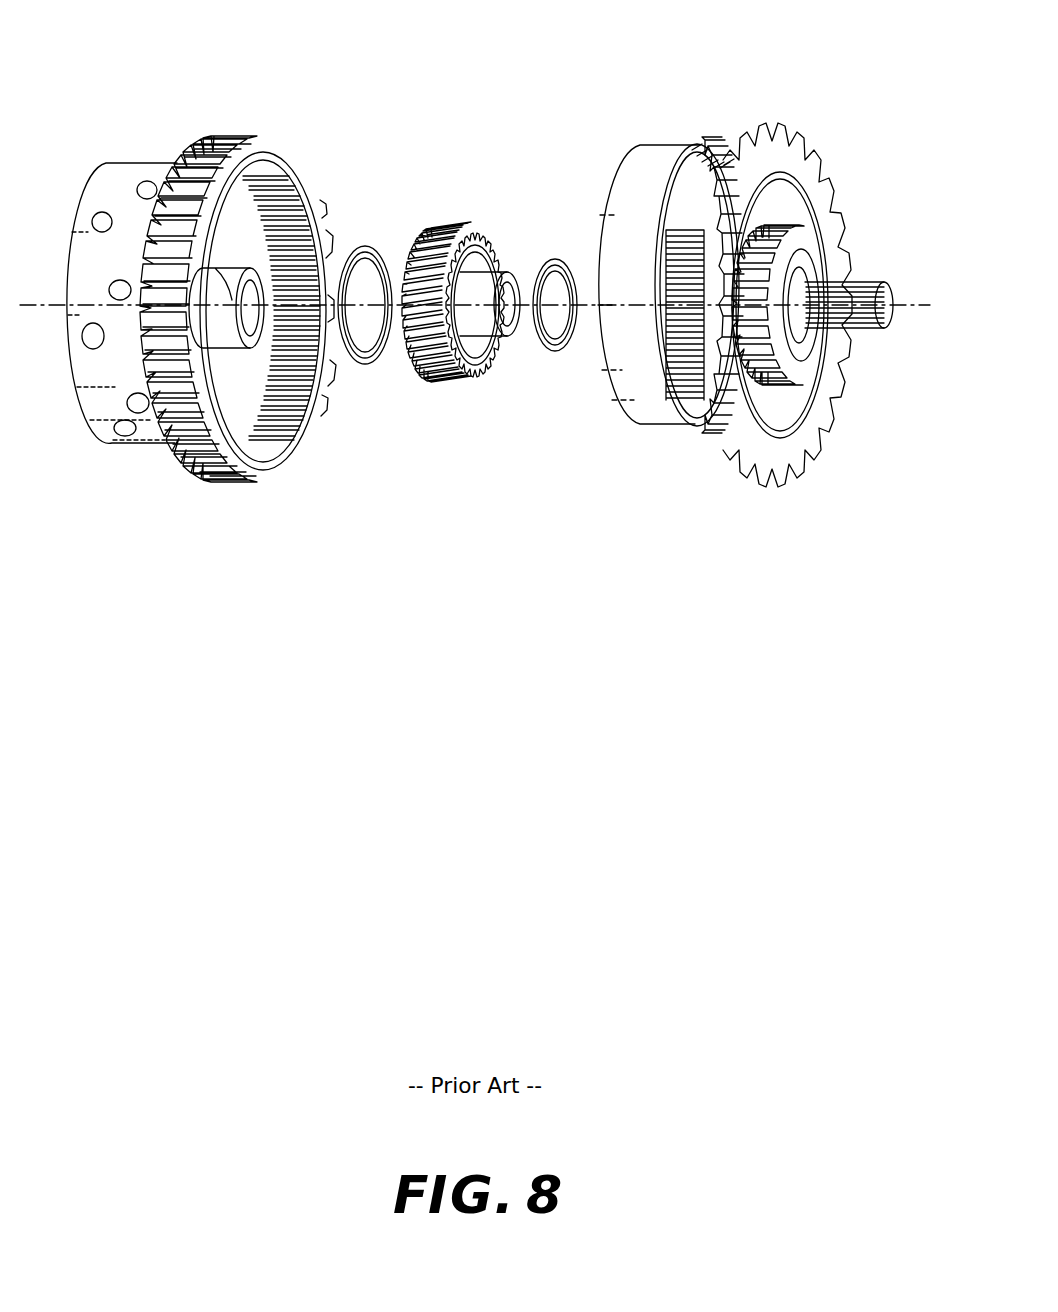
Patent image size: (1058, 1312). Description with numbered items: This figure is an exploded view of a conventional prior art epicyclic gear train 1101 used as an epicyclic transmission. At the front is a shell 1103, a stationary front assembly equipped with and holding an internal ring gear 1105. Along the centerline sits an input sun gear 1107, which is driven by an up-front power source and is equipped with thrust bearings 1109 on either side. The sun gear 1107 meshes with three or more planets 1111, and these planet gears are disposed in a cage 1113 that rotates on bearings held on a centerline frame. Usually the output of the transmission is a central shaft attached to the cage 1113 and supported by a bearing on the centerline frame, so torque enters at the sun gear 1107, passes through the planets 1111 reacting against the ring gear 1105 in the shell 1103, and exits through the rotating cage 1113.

The epicyclic gear train 1101 is at (124, 36).
The shell 1103 is at (233, 478).
The ring 1105 is at (307, 186).
The input sun gear 1107 is at (443, 386).
The thrust bearings 1109 is at (357, 250).
The planets 1111 is at (700, 397).
The cage 1113 is at (665, 158).